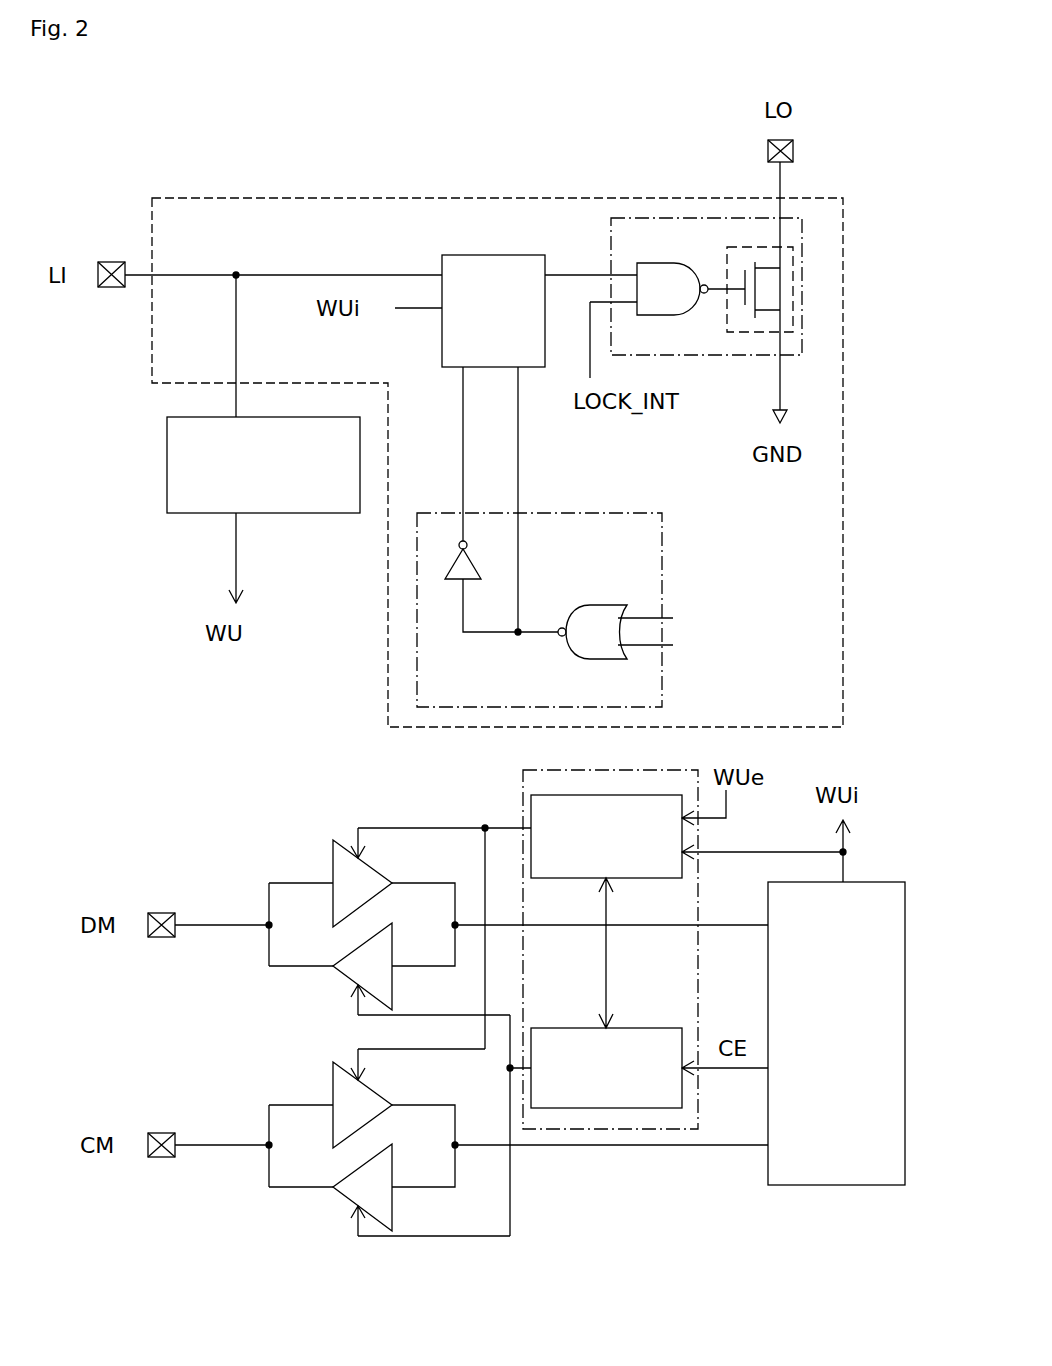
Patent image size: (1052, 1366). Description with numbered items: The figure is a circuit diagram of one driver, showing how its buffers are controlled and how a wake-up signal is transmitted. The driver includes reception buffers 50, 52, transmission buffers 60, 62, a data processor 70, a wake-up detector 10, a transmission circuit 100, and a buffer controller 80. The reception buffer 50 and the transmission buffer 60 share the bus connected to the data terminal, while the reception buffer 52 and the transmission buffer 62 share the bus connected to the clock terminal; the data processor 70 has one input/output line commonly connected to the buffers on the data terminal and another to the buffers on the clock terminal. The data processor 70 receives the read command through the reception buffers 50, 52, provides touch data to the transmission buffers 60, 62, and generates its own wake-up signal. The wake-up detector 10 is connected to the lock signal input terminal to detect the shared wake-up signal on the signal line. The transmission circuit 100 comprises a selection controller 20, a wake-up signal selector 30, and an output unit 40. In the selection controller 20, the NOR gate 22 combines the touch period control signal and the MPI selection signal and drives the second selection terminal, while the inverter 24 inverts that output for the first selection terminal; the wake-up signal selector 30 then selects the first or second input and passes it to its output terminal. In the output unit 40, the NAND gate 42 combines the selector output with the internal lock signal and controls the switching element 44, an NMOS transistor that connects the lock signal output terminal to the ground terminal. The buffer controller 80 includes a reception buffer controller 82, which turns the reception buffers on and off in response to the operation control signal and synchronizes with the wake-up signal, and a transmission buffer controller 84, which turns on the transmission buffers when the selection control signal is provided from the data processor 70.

The transmission circuit 100 is at (297, 197).
The wake-up detector 10 is at (322, 515).
The wake-up signal selector 30 is at (480, 254).
The output unit 40 is at (696, 265).
The NAND gate 42 is at (665, 317).
The switching element 44 is at (758, 246).
The selection controller 20 is at (582, 537).
The NOR gate 22 is at (603, 605).
The inverter 24 is at (460, 583).
The reception buffer 50 is at (333, 872).
The transmission buffer 60 is at (345, 977).
The reception buffer 52 is at (333, 1093).
The transmission buffer 62 is at (345, 1198).
The buffer controller 80 is at (574, 939).
The reception buffer controller 82 is at (575, 880).
The transmission buffer controller 84 is at (585, 1028).
The data processor 70 is at (828, 1185).